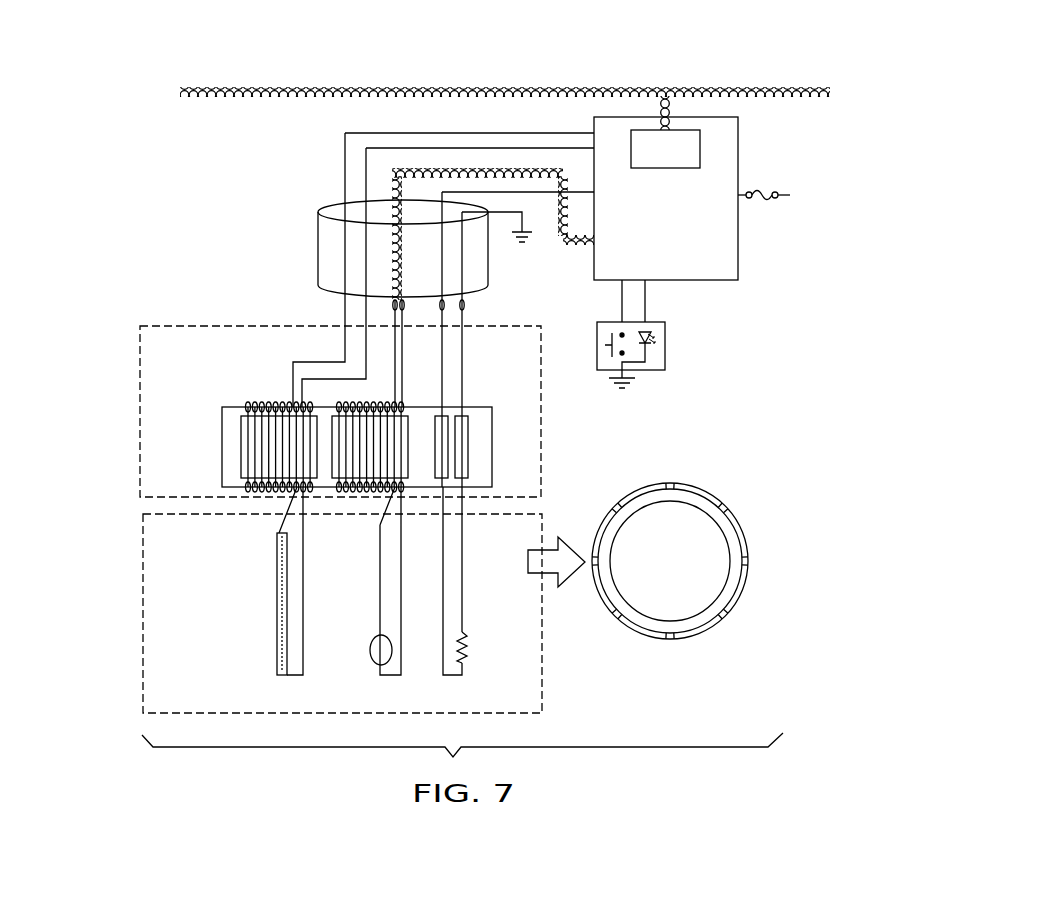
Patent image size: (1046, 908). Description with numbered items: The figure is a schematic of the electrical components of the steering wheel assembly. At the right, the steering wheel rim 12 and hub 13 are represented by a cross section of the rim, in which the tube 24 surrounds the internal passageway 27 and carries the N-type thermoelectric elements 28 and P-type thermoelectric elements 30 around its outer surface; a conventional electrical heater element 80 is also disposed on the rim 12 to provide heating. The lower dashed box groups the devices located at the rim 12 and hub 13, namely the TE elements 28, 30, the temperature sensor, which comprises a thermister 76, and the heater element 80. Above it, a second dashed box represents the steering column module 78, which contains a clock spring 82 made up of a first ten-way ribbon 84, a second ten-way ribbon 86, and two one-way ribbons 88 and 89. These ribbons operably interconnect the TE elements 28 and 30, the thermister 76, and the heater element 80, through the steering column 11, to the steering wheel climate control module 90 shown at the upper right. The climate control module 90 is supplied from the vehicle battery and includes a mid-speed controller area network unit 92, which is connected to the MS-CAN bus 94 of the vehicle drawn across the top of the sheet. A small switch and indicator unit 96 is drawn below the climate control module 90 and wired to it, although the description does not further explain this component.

The MS-CAN bus 94 is at (237, 88).
The MS-CAN unit 92 is at (690, 150).
The steering wheel climate control module 90 is at (738, 255).
The switch and indicator unit 96 is at (665, 342).
The steering column 11 is at (318, 246).
The steering column module 78 is at (140, 413).
The clock spring 82 is at (222, 428).
The first 10-way ribbon 84 is at (262, 405).
The second 10-way ribbon 86 is at (353, 487).
The 1-way ribbon 88 is at (435, 428).
The 1-way ribbon 89 is at (468, 428).
The circular rim 12 is at (142, 594).
The hub 13 is at (432, 598).
The tube 24 is at (707, 517).
The internal passageway 27 is at (690, 601).
The N-type thermoelectric elements 28 is at (537, 543).
The P-type thermoelectric elements 30 is at (278, 610).
The thermister 76 is at (382, 667).
The electrical heater element 80 is at (467, 643).